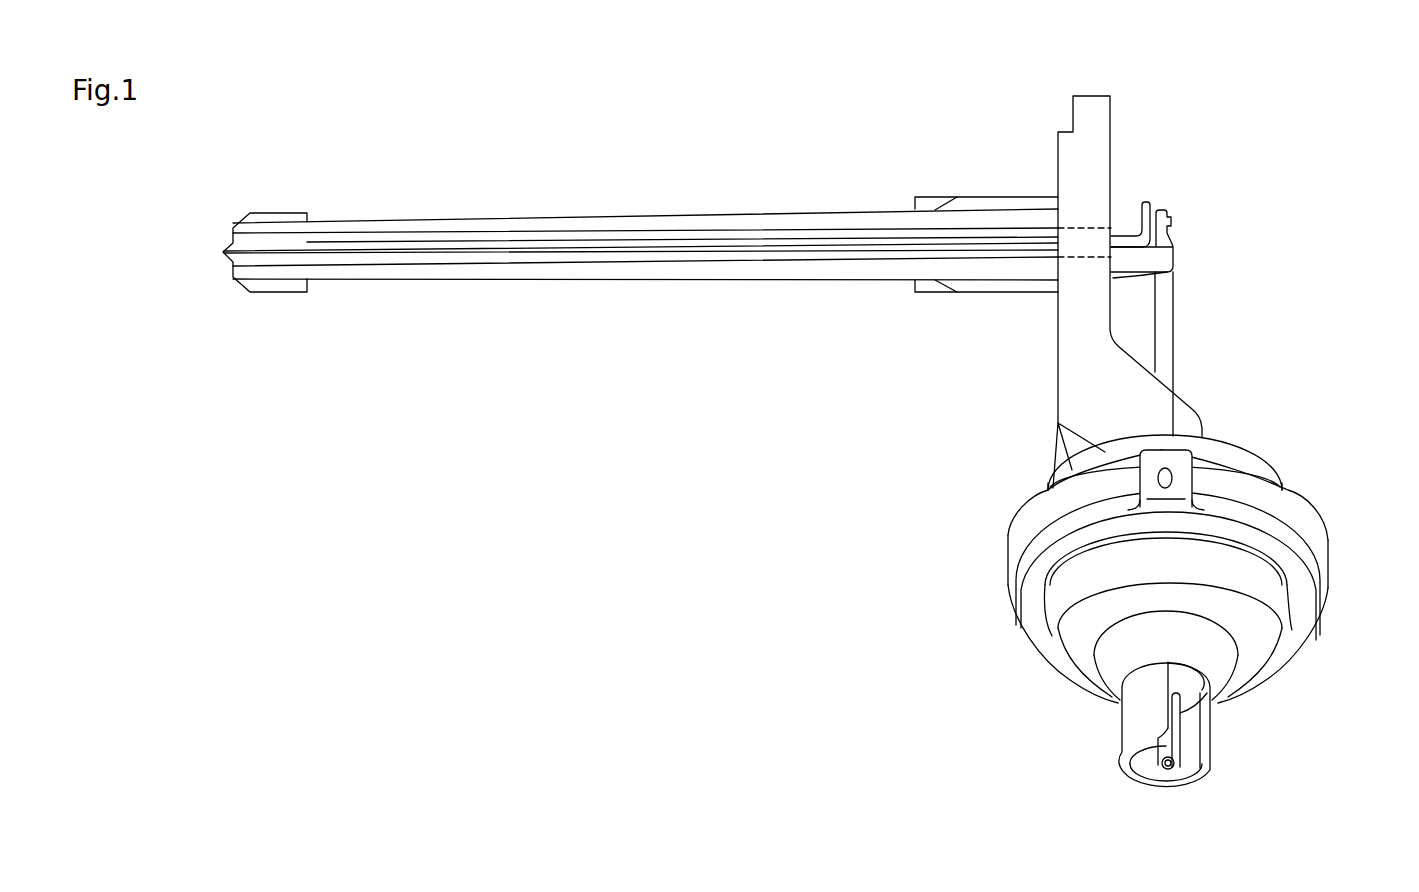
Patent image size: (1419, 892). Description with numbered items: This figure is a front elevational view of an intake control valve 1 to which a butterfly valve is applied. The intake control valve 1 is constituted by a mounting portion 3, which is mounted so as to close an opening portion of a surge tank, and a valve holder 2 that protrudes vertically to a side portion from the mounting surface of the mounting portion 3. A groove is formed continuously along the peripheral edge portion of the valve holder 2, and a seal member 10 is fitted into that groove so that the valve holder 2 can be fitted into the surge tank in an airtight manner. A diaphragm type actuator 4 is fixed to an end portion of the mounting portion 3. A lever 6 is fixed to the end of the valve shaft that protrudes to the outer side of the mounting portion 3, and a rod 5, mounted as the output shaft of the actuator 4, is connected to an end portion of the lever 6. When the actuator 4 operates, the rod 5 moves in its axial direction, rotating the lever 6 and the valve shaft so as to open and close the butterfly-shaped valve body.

The intake control valve 1 is at (912, 114).
The valve holder 2 is at (646, 215).
The seal member 10 is at (480, 240).
The mounting portion 3 is at (1068, 364).
The diaphragm type actuator 4 is at (1332, 549).
The rod 5 is at (1176, 333).
The lever 6 is at (1147, 200).